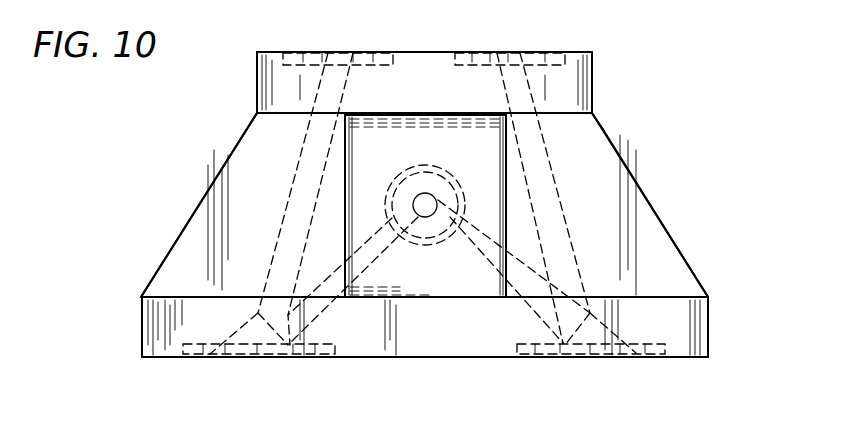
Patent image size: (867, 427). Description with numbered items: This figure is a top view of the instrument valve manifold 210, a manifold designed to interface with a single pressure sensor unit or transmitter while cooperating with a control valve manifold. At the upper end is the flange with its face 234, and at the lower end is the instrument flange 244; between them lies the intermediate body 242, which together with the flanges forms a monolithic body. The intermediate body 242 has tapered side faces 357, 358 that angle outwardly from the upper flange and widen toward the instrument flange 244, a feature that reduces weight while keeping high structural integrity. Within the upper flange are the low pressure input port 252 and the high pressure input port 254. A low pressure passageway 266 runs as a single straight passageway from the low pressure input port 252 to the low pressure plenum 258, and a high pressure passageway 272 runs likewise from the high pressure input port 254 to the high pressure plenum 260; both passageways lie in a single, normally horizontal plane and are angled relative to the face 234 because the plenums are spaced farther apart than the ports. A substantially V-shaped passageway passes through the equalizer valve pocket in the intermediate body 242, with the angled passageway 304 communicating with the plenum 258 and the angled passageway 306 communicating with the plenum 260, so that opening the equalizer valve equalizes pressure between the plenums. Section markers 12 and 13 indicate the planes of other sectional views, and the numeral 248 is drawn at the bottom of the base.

The instrument valve manifold 210 is at (698, 143).
The face of the flange 234 is at (418, 55).
The base plate 248 is at (425, 362).
The instrument flange 244 is at (708, 326).
The tapered side face 358 is at (165, 258).
The tapered side face 357 is at (680, 245).
The intermediate body 242 is at (602, 125).
The low pressure input port 252 is at (338, 58).
The high pressure input port 254 is at (513, 60).
The low pressure passageway 266 is at (297, 197).
The high pressure passageway 272 is at (555, 225).
The angled passageway 304 is at (315, 312).
The angled passageway 306 is at (532, 307).
The low pressure plenum 258 is at (245, 357).
The high pressure plenum 260 is at (583, 348).
The section line 13 is at (83, 203).
The section line 12 is at (790, 418).